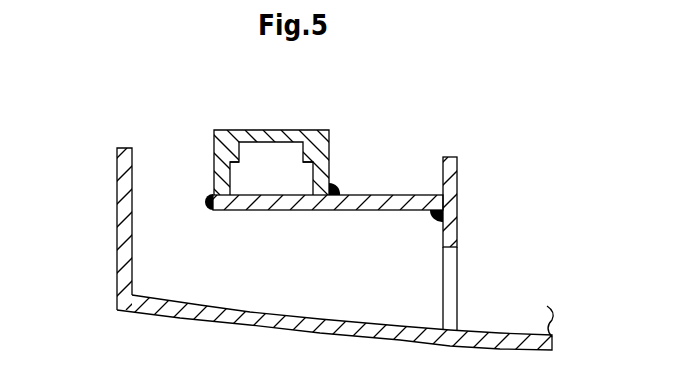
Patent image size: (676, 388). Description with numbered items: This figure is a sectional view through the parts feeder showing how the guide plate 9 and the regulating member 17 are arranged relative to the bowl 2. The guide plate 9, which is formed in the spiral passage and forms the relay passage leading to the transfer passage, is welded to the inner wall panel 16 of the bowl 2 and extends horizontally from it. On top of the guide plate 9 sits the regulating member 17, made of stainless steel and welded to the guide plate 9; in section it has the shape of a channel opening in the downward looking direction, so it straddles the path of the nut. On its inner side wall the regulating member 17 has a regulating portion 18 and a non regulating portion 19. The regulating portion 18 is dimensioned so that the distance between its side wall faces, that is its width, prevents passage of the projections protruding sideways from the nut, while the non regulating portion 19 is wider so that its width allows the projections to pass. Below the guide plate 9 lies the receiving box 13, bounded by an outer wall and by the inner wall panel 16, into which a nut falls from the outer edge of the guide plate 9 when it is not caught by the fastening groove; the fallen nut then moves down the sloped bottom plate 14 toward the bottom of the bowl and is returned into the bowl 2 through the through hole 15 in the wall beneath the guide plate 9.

The bowl 2 is at (517, 283).
The guide plate 9 is at (399, 196).
The receiving box 13 is at (117, 197).
The sloped bottom plate 14 is at (252, 310).
The through hole 15 is at (445, 295).
The inner wall panel 16 is at (457, 165).
The regulating member 17 is at (329, 138).
The regulating portion 18 is at (244, 152).
The non regulating portion 19 is at (230, 183).